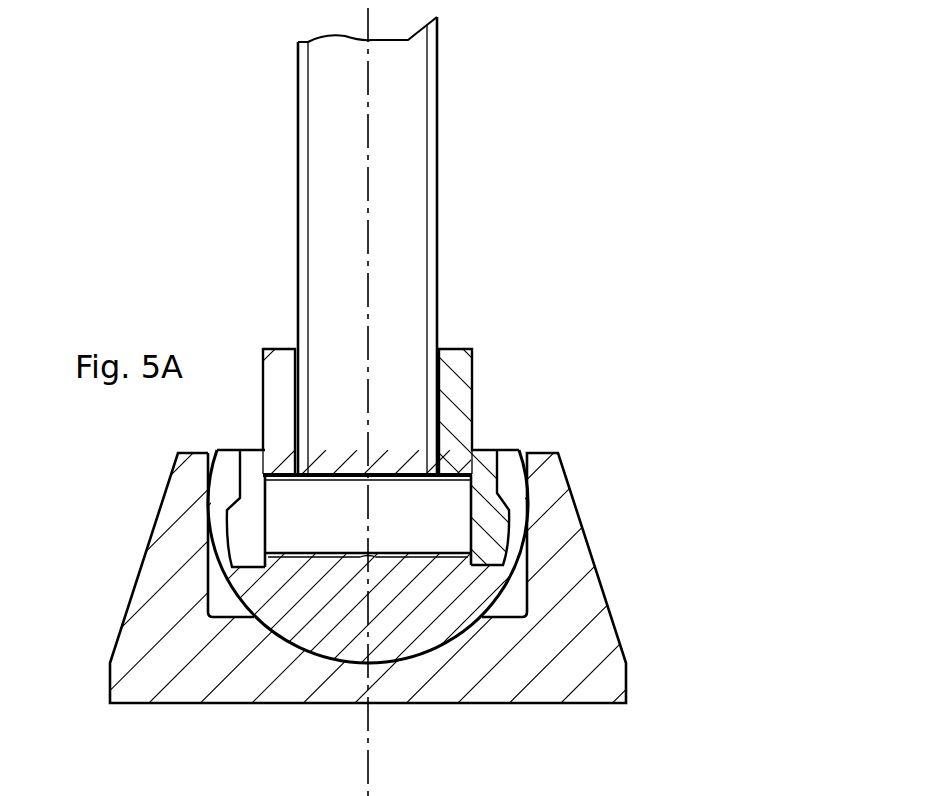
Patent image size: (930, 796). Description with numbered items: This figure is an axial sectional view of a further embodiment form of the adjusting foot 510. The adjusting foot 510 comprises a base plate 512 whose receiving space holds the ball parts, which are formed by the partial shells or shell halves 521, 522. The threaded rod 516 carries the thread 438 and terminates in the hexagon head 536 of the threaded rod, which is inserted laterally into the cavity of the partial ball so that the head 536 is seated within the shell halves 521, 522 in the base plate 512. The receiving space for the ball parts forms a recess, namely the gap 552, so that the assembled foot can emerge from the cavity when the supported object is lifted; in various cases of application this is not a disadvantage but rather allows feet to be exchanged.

The thread 438 is at (427, 95).
The threaded rod 516 is at (427, 175).
The hexagon, head threaded rod 536 is at (428, 317).
The shell halves, partial shell 522 is at (462, 393).
The gap 552 is at (519, 450).
The base plate 512 is at (563, 528).
The shell halves, partial shell 521 is at (493, 528).
The adjusting foot 510 is at (542, 776).